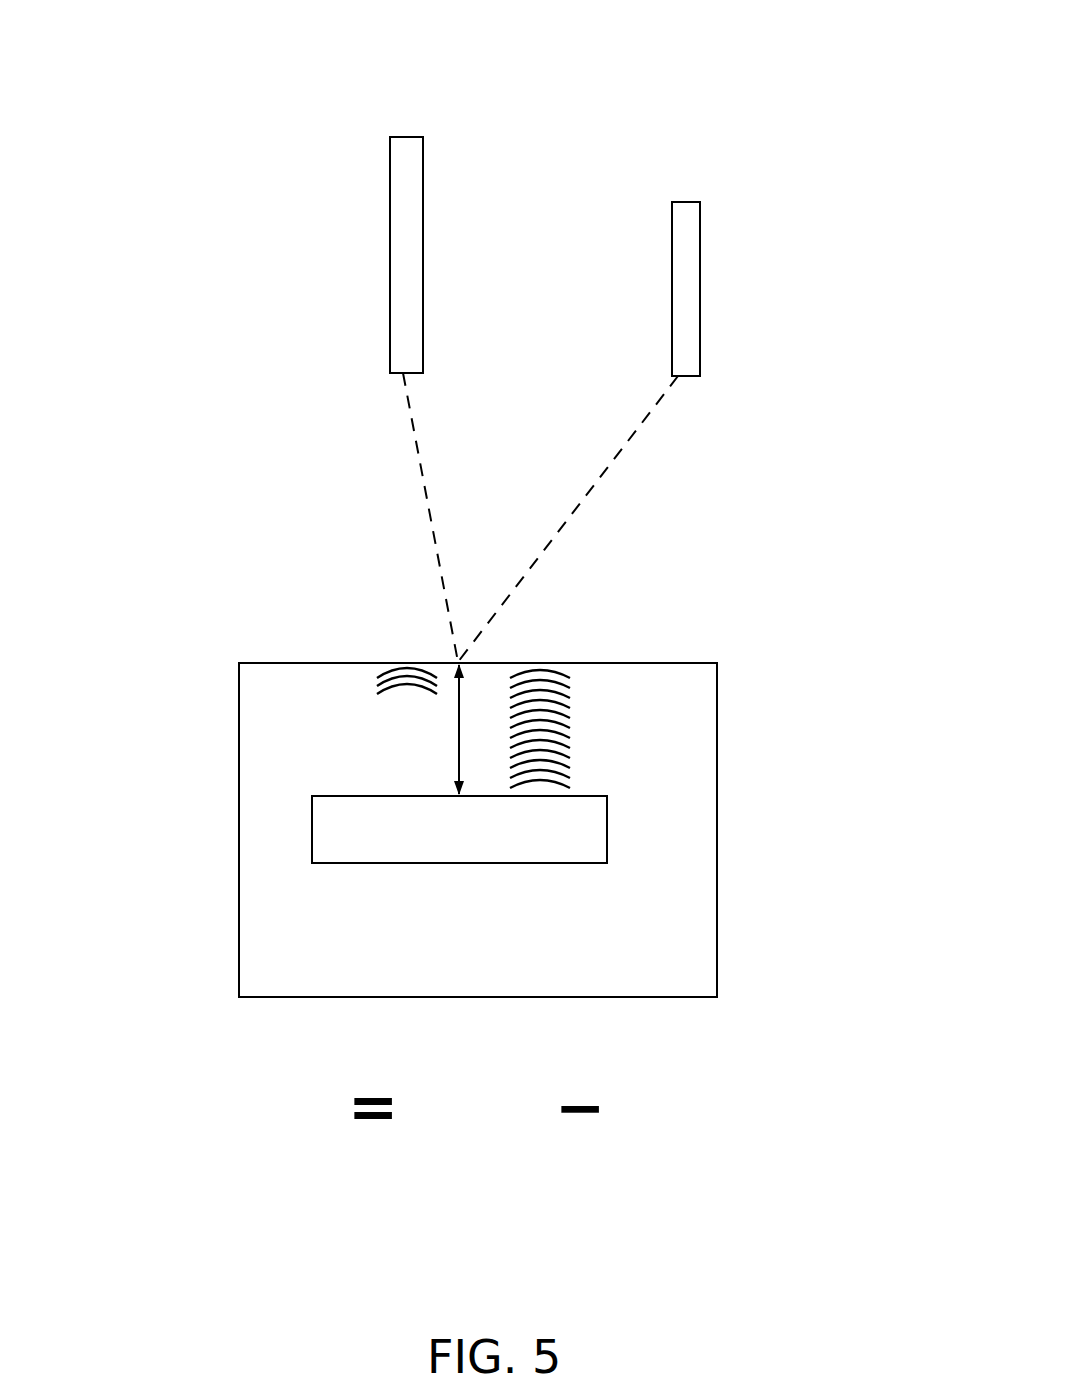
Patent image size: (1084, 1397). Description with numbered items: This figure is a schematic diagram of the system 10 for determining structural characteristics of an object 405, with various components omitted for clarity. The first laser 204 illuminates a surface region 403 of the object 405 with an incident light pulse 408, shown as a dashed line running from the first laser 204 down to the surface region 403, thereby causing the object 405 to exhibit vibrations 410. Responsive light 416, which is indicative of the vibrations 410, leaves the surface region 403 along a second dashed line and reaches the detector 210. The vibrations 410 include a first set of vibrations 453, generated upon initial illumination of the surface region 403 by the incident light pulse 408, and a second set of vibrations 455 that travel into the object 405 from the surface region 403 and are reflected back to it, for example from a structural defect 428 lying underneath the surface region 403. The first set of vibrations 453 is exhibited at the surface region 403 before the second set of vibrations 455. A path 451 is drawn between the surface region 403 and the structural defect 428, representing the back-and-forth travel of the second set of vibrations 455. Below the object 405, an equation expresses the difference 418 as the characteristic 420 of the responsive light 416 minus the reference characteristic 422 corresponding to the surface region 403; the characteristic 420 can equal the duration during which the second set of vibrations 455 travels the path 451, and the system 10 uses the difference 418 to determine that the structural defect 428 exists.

The system 10 is at (339, 72).
The first laser 204 is at (390, 217).
The detector 210 is at (672, 221).
The incident light pulse 408 is at (425, 482).
The responsive light 416 is at (585, 500).
The surface region 403 is at (444, 654).
The vibrations 410 is at (512, 624).
The object 405 is at (717, 693).
The structural defect 428 is at (607, 828).
The path 451 is at (459, 718).
The first set of vibrations 453 is at (366, 700).
The second set of vibrations 455 is at (586, 709).
The difference 418 is at (266, 1150).
The characteristic 420 is at (451, 1150).
The reference characteristic 422 is at (651, 1150).